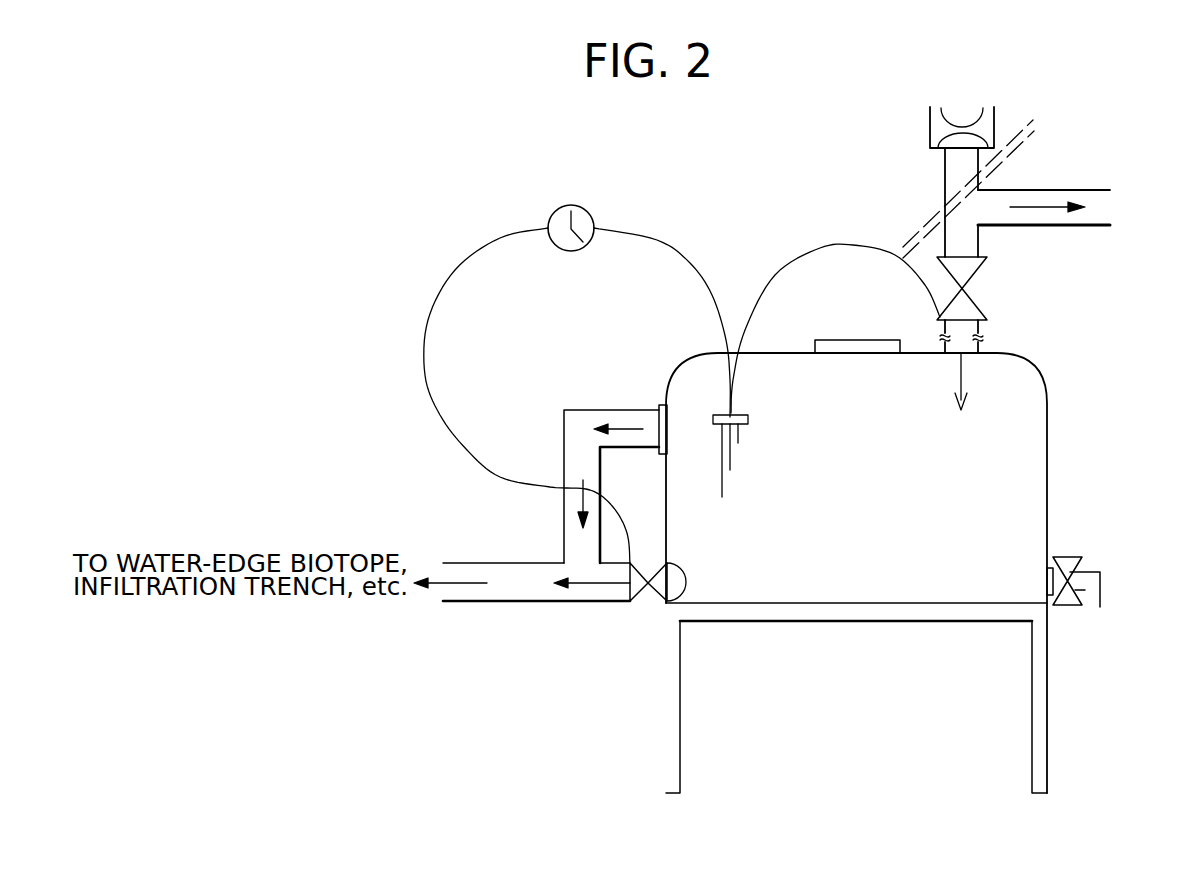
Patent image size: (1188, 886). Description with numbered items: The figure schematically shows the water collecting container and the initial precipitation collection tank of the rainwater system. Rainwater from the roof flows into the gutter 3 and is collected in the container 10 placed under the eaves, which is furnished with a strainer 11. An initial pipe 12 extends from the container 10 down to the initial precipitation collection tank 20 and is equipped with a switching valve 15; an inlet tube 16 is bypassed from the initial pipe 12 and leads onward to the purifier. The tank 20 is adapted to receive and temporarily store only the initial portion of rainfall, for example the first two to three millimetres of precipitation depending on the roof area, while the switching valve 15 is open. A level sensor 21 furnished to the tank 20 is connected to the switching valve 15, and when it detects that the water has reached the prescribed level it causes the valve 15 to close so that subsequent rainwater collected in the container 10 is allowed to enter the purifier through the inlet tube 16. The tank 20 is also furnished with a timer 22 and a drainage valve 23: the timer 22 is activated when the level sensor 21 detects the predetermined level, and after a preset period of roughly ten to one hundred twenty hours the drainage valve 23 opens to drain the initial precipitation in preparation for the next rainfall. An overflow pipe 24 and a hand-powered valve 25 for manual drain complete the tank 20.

The gutter 3 is at (975, 113).
The container 10 is at (930, 110).
The strainer 11 is at (940, 145).
The initial pipe 12 is at (945, 180).
The switching valve 15 is at (975, 272).
The inlet tube 16 is at (1103, 190).
The initial precipitation collection tank 20 is at (1047, 405).
The level sensor 21 is at (750, 417).
The timer 22 is at (571, 205).
The drainage valve 23 is at (636, 598).
The overflow pipe 24 is at (590, 410).
The hand-powered valve 25 is at (1070, 557).